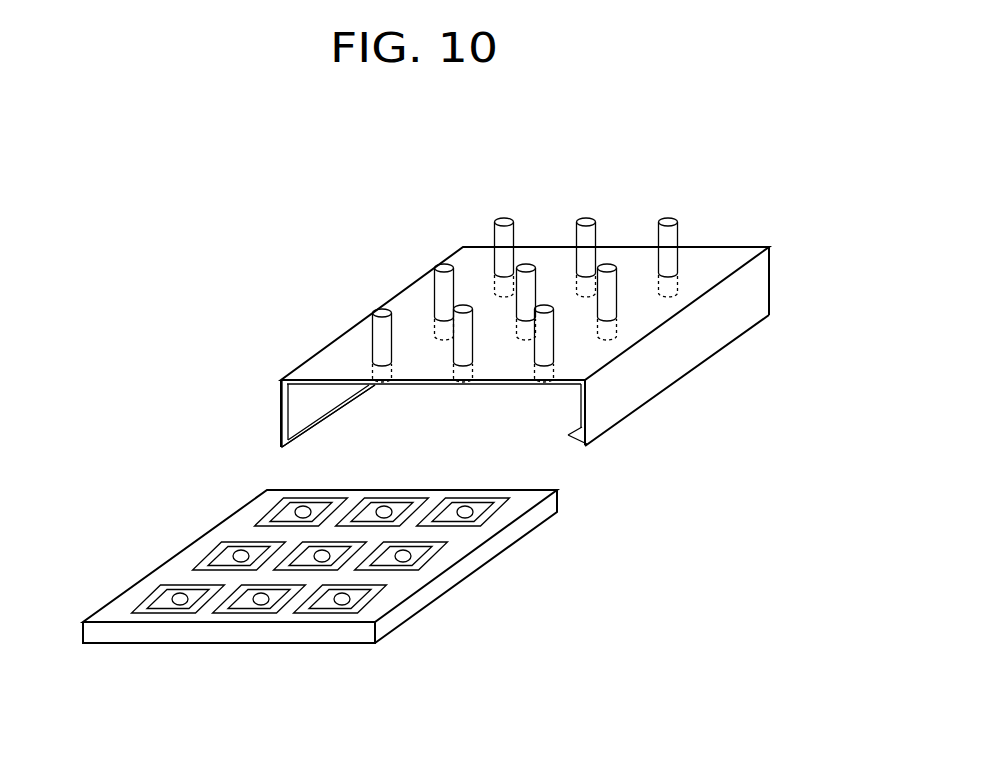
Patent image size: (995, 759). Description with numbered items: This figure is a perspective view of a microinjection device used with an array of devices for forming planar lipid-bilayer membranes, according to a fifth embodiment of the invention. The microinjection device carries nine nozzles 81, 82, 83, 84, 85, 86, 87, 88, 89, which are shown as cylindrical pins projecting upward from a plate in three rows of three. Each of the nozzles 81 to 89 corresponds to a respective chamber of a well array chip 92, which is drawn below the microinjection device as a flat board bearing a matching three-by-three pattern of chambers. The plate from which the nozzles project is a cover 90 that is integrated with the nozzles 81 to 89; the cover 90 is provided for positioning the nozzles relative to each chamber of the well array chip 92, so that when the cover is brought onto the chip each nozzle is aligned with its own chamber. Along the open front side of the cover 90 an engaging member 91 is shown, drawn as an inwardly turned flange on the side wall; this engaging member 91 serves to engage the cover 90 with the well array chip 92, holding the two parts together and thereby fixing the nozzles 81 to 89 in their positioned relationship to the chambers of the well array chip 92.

The nozzle 81 is at (373, 333).
The nozzle 82 is at (457, 358).
The nozzle 83 is at (538, 361).
The nozzle 84 is at (440, 278).
The nozzle 85 is at (525, 262).
The nozzle 86 is at (607, 262).
The nozzle 87 is at (495, 232).
The nozzle 88 is at (585, 221).
The nozzle 89 is at (663, 220).
The cover 90 is at (730, 255).
The engaging member 91 is at (282, 412).
The well array chip 92 is at (240, 490).